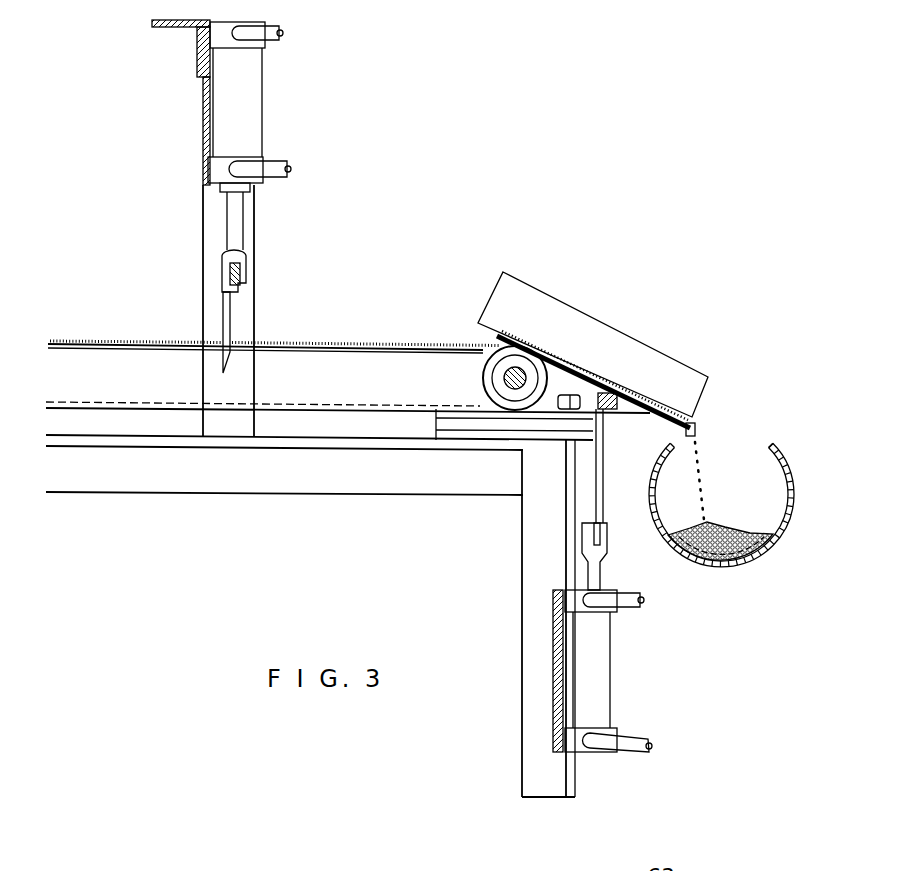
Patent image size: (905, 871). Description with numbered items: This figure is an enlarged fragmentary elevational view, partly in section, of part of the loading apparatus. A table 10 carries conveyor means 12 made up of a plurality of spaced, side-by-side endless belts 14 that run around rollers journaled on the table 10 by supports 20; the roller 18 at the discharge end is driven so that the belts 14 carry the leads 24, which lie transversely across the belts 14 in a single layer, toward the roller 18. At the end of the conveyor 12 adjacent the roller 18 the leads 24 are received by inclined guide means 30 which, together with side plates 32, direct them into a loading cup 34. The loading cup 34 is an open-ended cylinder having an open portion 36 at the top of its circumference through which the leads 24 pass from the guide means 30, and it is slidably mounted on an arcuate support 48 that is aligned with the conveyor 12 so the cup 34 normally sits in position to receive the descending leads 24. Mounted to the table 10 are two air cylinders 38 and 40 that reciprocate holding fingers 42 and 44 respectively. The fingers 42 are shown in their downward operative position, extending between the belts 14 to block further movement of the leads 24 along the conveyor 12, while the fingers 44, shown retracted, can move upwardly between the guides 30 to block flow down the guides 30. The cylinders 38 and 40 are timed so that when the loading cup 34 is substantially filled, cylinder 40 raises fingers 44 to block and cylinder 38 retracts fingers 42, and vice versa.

The table 10 is at (285, 472).
The conveyor means 12 is at (274, 311).
The endless belts 14 is at (290, 344).
The roller 18 is at (481, 378).
The supports 20 is at (483, 367).
The leads 24 is at (160, 341).
The inclined guide means 30 is at (585, 385).
The side plates 32 is at (612, 336).
The loading cup 34 is at (778, 535).
The open portion 36 is at (743, 438).
The air cylinder 38 is at (243, 118).
The air cylinder 40 is at (593, 668).
The holding fingers 42 is at (225, 312).
The holding fingers 44 is at (602, 480).
The arcuate support 48 is at (718, 567).